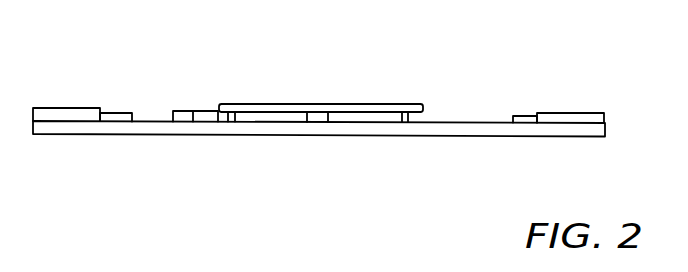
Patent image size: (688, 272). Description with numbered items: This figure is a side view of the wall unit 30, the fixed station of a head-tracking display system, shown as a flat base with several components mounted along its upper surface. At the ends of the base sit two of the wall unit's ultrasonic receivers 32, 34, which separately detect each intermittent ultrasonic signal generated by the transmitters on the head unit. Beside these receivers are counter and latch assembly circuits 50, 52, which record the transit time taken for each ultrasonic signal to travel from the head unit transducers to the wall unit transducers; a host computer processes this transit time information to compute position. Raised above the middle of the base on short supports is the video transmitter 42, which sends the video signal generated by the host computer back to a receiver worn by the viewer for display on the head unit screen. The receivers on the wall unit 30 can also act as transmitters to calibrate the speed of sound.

The wall unit 30 is at (450, 116).
The ultrasonic receiver 32 is at (573, 113).
The ultrasonic receiver 34 is at (53, 112).
The video transmitter 42 is at (310, 110).
The counter and latch assembly circuit 50 is at (122, 113).
The counter and latch assembly circuit 52 is at (520, 117).